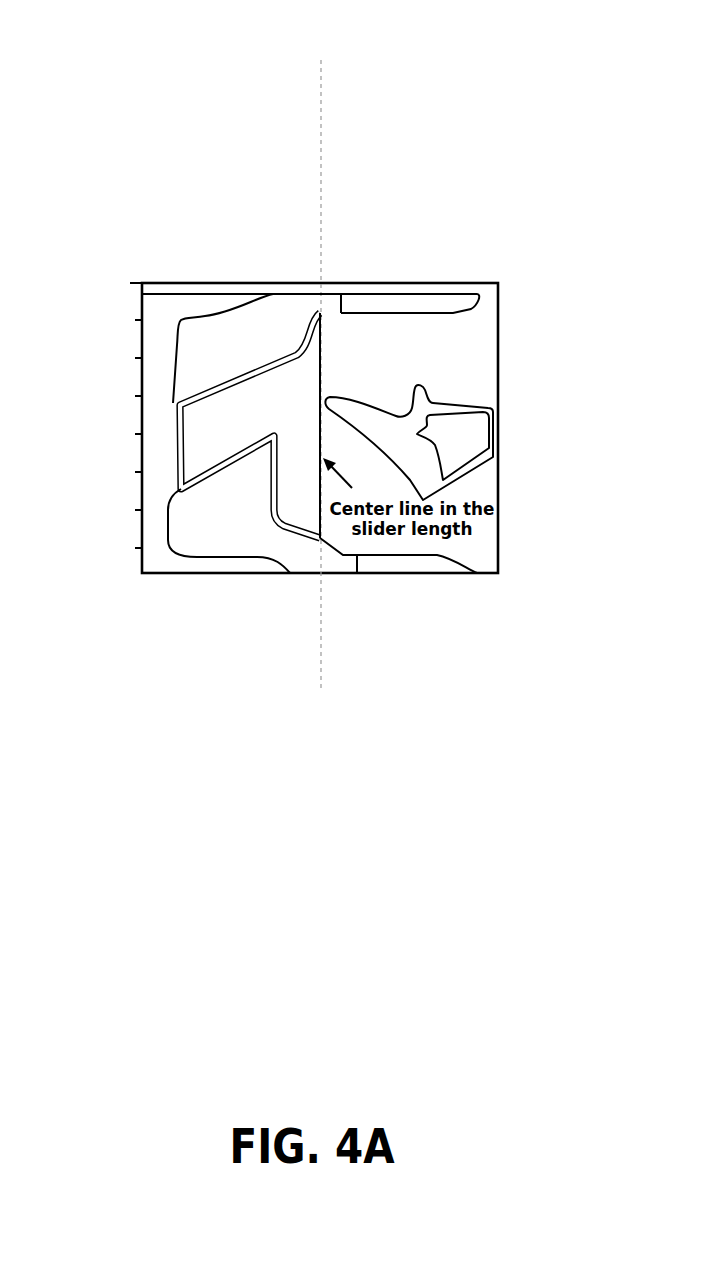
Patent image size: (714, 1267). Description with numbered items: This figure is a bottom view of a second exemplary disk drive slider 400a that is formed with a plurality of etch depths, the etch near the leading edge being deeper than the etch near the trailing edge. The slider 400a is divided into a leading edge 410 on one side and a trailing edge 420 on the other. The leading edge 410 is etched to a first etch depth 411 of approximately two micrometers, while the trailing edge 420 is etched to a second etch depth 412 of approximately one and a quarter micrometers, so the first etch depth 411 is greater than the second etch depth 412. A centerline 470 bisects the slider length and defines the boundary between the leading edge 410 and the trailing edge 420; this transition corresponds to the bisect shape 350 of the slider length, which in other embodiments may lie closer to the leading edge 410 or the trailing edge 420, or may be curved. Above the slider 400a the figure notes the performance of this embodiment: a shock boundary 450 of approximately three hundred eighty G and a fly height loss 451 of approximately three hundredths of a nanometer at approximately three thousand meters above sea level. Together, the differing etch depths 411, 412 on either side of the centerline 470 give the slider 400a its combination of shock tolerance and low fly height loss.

The slider 400a is at (98, 31).
The bisect shape 350 is at (335, 123).
The shock boundary 450 is at (262, 240).
The fly height loss 451 is at (367, 240).
The leading edge 410 is at (140, 420).
The first etch depth 411 is at (163, 487).
The second etch depth 412 is at (480, 353).
The trailing edge 420 is at (495, 438).
The centerline 470 is at (480, 553).